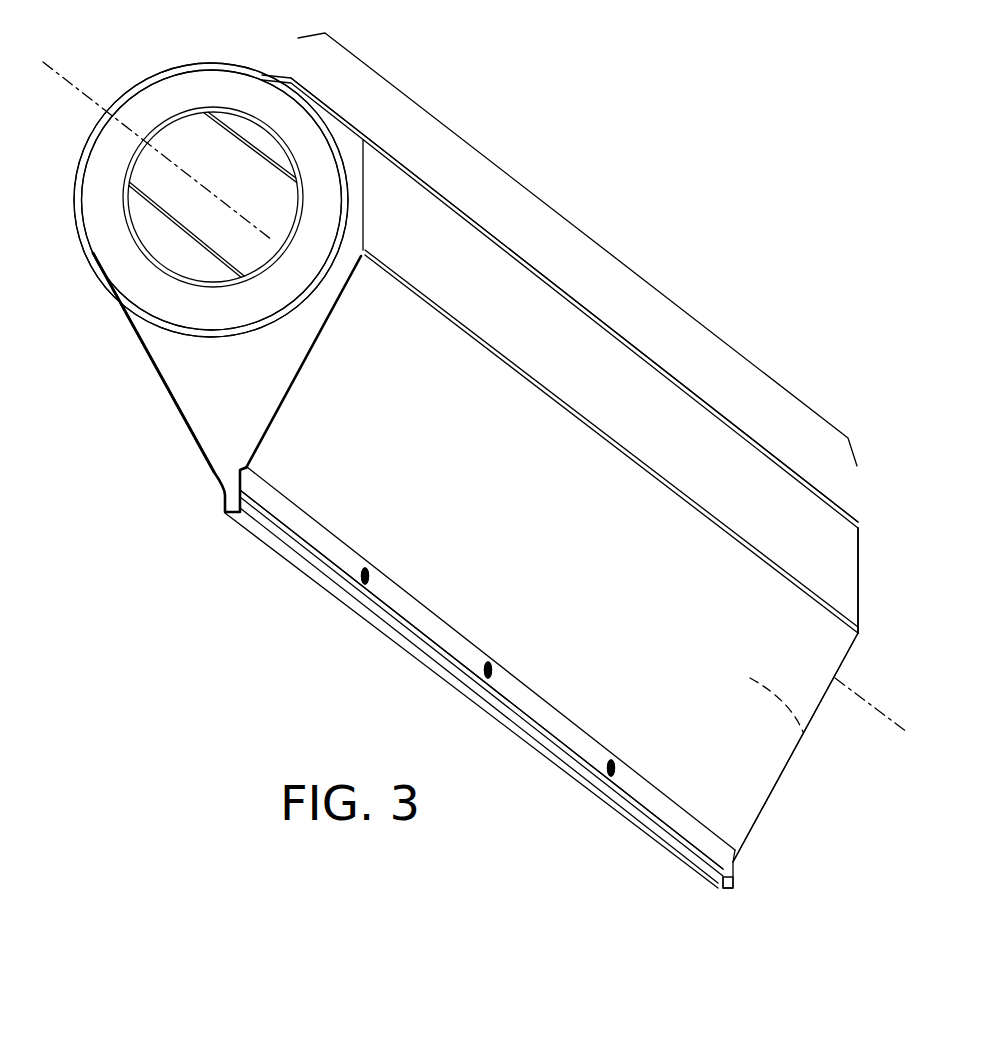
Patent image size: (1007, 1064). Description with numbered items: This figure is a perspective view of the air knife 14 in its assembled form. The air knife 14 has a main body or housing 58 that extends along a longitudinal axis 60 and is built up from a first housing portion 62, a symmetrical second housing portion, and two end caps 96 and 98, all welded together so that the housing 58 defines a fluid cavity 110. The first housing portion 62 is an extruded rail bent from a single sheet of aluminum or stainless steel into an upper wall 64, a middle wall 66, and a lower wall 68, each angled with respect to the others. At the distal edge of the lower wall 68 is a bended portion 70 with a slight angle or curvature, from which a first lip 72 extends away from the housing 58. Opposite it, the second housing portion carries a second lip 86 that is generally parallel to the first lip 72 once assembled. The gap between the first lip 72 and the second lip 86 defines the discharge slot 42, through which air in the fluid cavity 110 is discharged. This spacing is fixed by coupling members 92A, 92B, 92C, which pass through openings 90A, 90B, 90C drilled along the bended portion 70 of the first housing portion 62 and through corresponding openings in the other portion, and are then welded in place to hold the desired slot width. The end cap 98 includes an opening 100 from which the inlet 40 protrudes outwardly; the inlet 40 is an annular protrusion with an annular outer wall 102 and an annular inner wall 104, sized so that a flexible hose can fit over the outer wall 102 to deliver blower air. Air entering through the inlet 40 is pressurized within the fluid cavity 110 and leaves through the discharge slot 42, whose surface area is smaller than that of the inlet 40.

The air knife 14 is at (236, 678).
The inlet 40 is at (137, 85).
The discharge slot 42 is at (508, 722).
The housing 58 is at (576, 226).
The longitudinal axis 60 is at (880, 712).
The first housing portion 62 is at (862, 548).
The upper wall 64 is at (607, 320).
The middle wall 66 is at (838, 575).
The lower wall 68 is at (760, 758).
The bended portion 70 is at (728, 853).
The first lip 72 is at (735, 875).
The second lip 86 is at (277, 542).
The opening 90A is at (362, 569).
The opening 90B is at (486, 663).
The opening 90C is at (609, 761).
The coupling member 92A is at (371, 577).
The coupling member 92B is at (495, 670).
The coupling member 92C is at (619, 770).
The end cap 96 is at (803, 732).
The end cap 98 is at (213, 410).
The opening 100 is at (178, 328).
The annular outer wall 102 is at (315, 153).
The annular inner wall 104 is at (98, 220).
The fluid cavity 110 is at (211, 181).